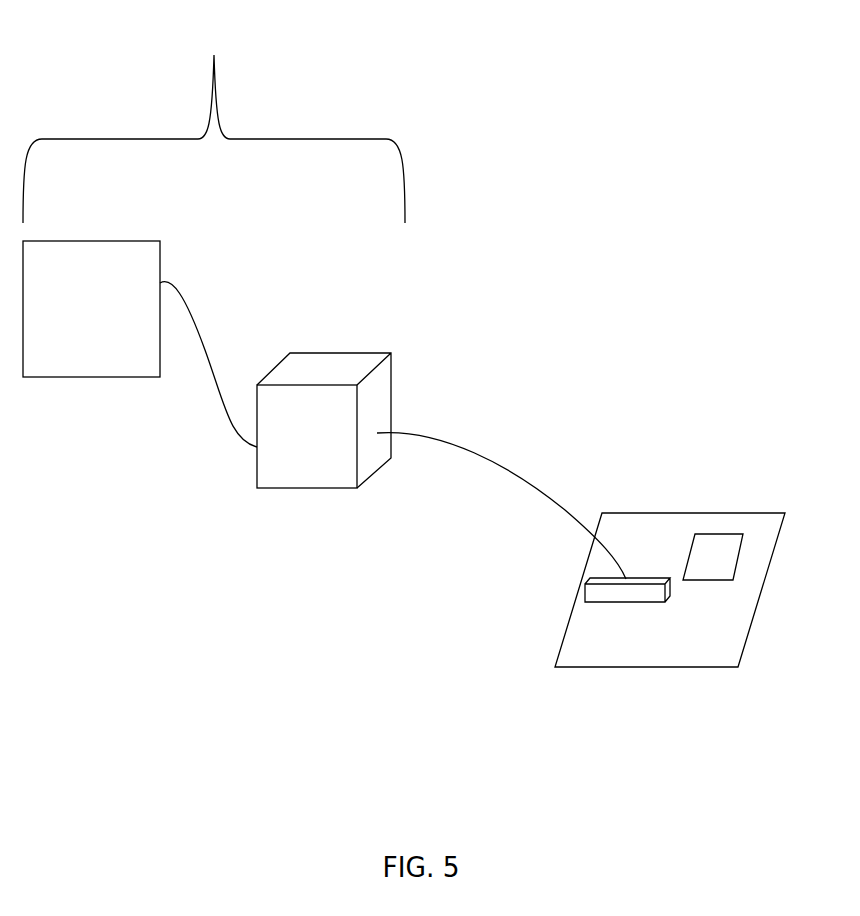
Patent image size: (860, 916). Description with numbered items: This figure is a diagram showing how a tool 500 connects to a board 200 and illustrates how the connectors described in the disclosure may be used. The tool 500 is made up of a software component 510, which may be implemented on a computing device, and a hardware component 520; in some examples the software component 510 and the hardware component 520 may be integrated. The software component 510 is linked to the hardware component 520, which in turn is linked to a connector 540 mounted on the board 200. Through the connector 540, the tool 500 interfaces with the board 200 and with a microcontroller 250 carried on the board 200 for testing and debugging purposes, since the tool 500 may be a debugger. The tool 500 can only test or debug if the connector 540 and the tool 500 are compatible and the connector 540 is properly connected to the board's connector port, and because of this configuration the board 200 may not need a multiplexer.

The tool 500 is at (214, 116).
The software component 510 is at (91, 309).
The hardware component 520 is at (324, 420).
The connector 540 is at (647, 582).
The microcontroller 250 is at (712, 548).
The board 200 is at (670, 590).